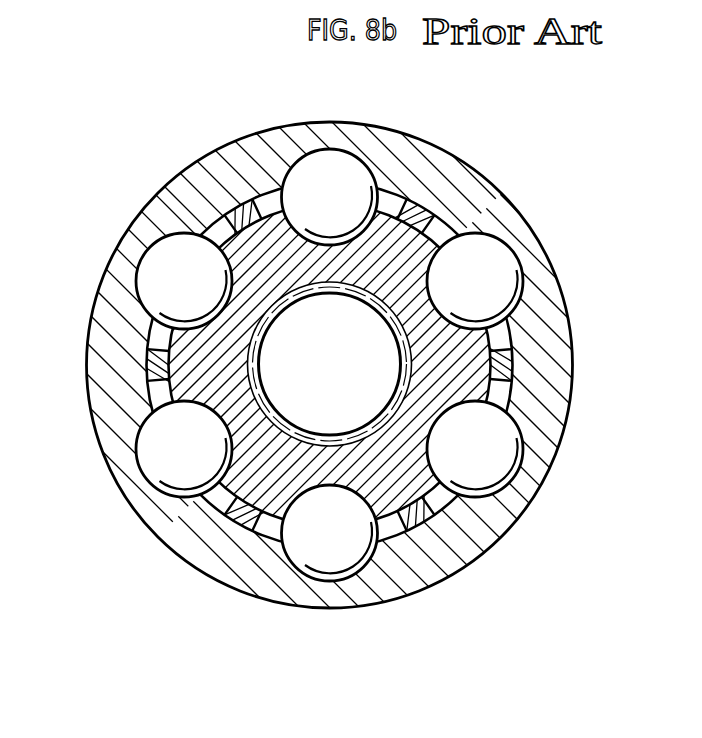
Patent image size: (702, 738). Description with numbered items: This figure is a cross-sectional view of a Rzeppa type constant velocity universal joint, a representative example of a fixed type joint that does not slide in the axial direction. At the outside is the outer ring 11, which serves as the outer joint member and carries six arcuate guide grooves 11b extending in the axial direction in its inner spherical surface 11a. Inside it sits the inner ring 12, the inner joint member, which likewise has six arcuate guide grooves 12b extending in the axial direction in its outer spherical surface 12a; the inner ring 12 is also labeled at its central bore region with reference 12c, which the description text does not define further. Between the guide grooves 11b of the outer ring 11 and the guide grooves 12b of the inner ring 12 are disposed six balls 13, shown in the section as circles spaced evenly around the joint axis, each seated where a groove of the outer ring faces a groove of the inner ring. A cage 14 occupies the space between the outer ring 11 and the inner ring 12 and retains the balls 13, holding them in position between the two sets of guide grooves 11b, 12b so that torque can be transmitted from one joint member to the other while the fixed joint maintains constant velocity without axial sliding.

The outer ring 11 is at (165, 177).
The inner spherical surface 11a is at (205, 244).
The arcuate guide grooves 11b is at (152, 263).
The inner ring 12 is at (387, 240).
The outer spherical surface 12a is at (433, 240).
The arcuate guide grooves 12b is at (426, 290).
The bore of inner ring 12c is at (412, 349).
The balls 13 is at (364, 160).
The cage 14 is at (240, 197).